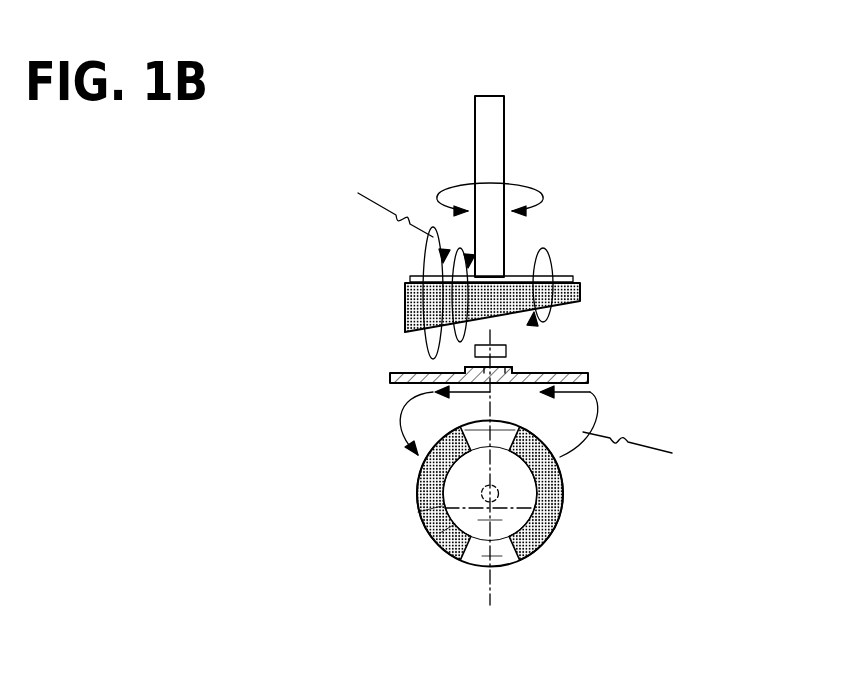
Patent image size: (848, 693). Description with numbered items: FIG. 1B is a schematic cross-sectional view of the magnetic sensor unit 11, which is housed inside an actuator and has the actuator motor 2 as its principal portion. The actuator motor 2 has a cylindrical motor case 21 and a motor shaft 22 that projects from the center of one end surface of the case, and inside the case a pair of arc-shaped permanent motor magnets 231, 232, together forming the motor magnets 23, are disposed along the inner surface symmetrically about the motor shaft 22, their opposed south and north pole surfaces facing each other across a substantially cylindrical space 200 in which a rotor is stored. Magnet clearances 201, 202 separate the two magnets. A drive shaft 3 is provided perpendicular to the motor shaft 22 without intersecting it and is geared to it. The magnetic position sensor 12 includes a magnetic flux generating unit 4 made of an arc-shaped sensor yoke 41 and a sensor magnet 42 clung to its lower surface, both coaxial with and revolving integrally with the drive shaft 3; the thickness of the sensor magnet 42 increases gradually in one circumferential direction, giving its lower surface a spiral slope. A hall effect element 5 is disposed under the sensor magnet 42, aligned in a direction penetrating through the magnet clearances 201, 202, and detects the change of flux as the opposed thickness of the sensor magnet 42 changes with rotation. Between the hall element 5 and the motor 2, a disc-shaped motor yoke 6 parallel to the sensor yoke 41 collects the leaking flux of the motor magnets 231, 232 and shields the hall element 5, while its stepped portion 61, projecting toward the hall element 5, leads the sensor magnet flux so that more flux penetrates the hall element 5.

The actuator motor 2 is at (427, 537).
The drive shaft 3 is at (504, 136).
The magnetic flux generating unit 4 is at (410, 276).
The hall effect element 5 is at (507, 351).
The motor yoke 6 is at (551, 385).
The magnetic sensor unit 11 is at (471, 533).
The magnetic position sensor 12 is at (386, 270).
The motor case 21 is at (540, 560).
The motor shaft 22 is at (482, 489).
The motor magnets 23 is at (336, 561).
The sensor yoke 41 is at (410, 277).
The sensor magnet 42 is at (406, 307).
The stepped portion 61 is at (512, 369).
The cylindrical space 200 is at (490, 520).
The magnet clearance 201 is at (487, 435).
The magnet clearance 202 is at (492, 555).
The motor magnet 231 is at (417, 513).
The motor magnet 232 is at (440, 533).